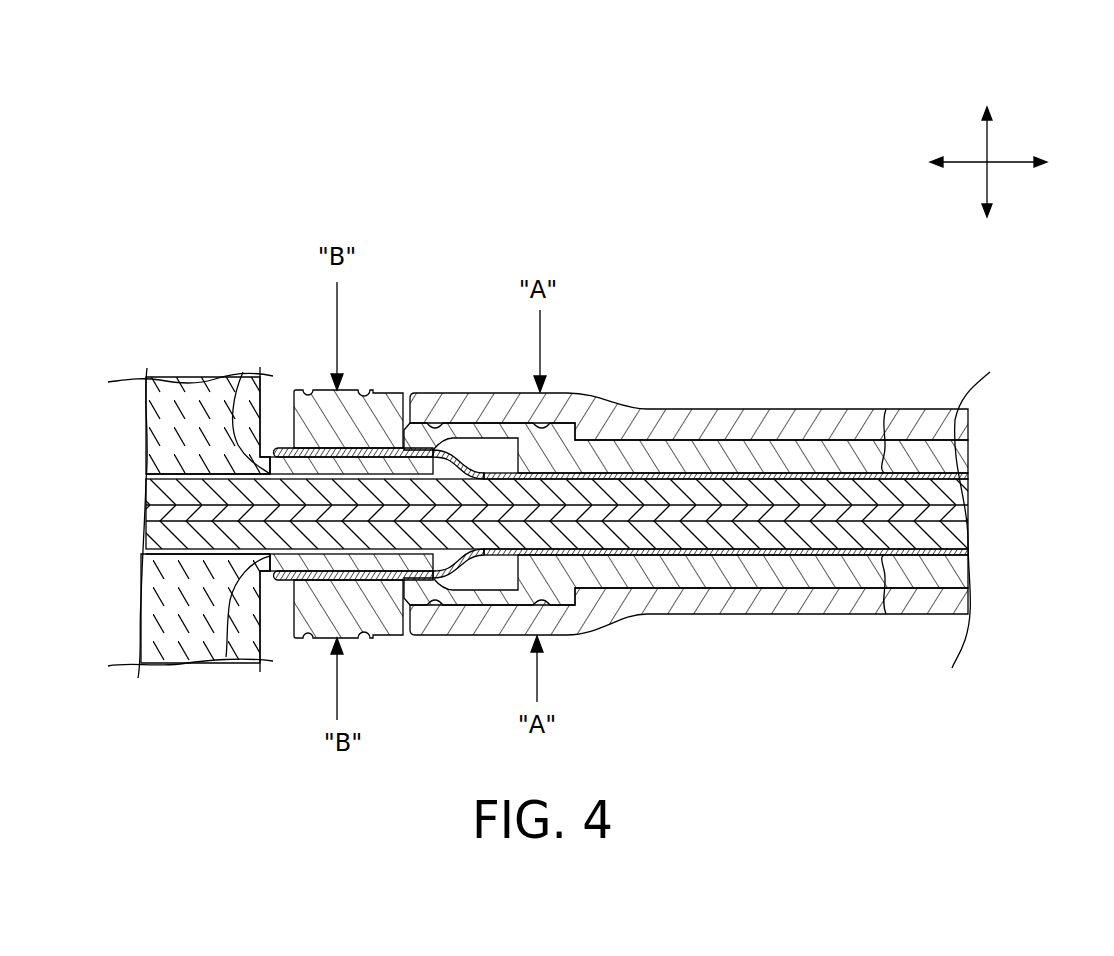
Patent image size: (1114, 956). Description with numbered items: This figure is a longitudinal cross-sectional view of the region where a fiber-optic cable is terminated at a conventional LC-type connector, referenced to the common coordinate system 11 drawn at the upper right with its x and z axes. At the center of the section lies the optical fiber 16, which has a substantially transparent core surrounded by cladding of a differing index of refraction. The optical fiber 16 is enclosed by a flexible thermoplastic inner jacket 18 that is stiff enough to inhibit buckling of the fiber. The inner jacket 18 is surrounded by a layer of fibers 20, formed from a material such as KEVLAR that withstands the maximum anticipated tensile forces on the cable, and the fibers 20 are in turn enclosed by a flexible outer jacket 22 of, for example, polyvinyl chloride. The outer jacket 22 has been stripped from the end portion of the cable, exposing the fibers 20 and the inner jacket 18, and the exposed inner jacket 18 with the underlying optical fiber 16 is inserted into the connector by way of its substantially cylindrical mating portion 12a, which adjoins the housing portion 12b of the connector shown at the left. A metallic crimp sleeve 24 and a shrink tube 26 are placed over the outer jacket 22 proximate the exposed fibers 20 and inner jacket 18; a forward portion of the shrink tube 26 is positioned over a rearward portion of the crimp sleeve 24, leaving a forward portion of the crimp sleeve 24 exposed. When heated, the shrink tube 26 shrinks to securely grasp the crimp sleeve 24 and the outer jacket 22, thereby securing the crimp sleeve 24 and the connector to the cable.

The coordinate system 11 is at (1012, 138).
The mating portion 12a is at (243, 372).
The housing portion 12b is at (190, 387).
The optical fiber 16 is at (963, 507).
The inner jacket 18 is at (957, 490).
The layer of fibers 20 is at (884, 409).
The outer jacket 22 is at (655, 467).
The crimp sleeve 24 is at (353, 388).
The shrink tube 26 is at (730, 408).